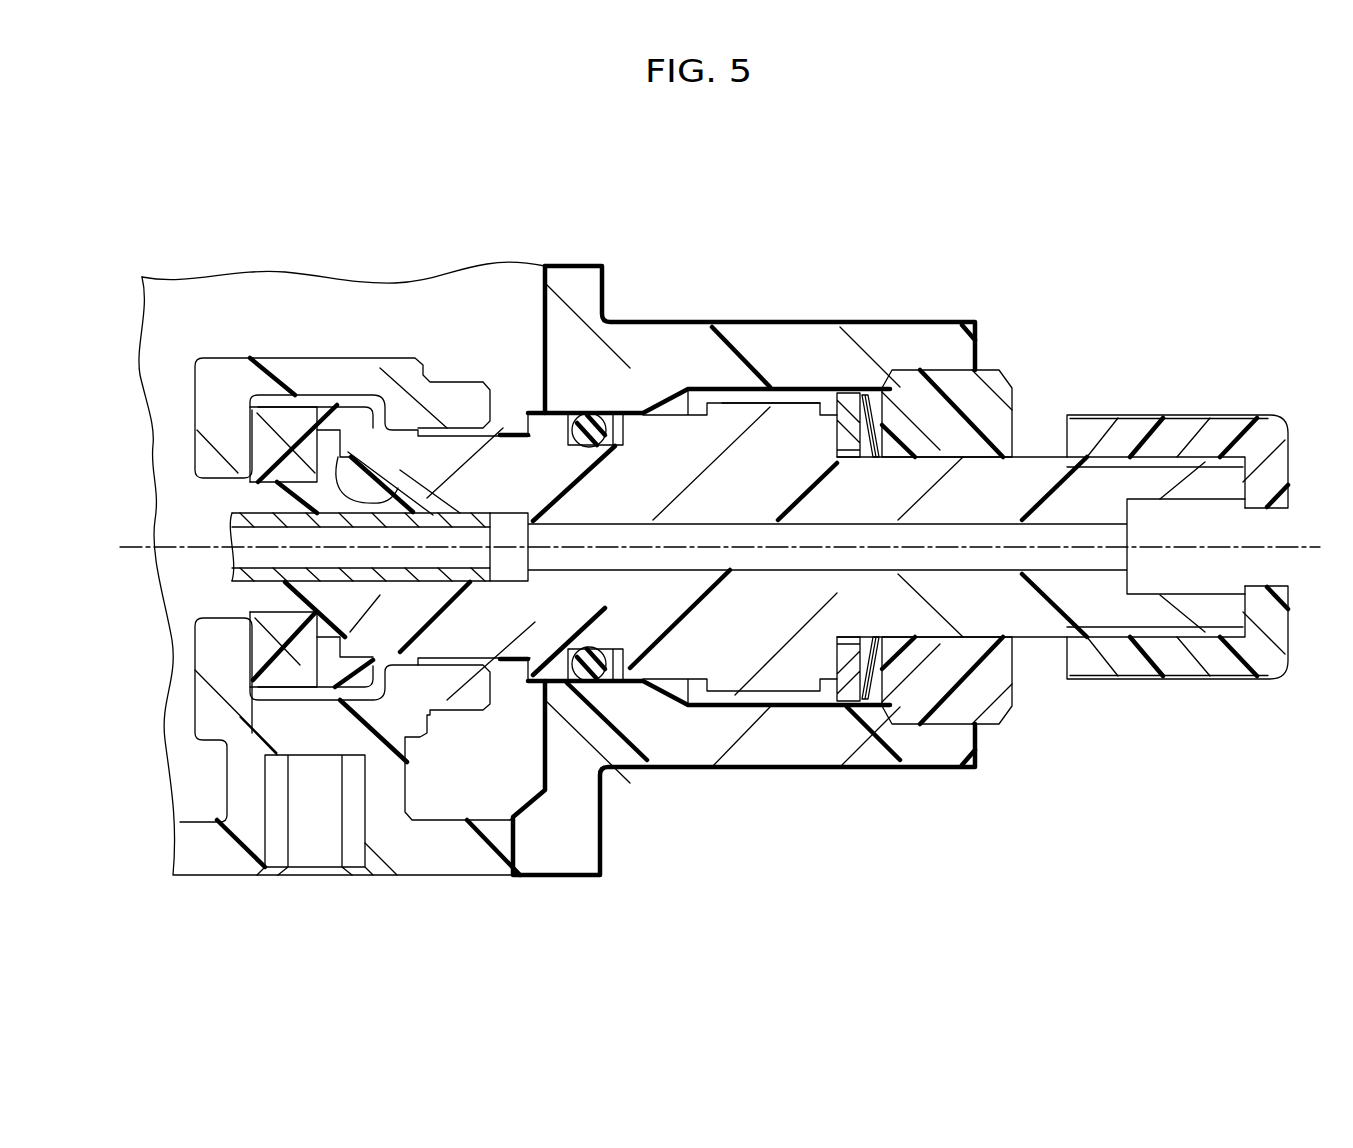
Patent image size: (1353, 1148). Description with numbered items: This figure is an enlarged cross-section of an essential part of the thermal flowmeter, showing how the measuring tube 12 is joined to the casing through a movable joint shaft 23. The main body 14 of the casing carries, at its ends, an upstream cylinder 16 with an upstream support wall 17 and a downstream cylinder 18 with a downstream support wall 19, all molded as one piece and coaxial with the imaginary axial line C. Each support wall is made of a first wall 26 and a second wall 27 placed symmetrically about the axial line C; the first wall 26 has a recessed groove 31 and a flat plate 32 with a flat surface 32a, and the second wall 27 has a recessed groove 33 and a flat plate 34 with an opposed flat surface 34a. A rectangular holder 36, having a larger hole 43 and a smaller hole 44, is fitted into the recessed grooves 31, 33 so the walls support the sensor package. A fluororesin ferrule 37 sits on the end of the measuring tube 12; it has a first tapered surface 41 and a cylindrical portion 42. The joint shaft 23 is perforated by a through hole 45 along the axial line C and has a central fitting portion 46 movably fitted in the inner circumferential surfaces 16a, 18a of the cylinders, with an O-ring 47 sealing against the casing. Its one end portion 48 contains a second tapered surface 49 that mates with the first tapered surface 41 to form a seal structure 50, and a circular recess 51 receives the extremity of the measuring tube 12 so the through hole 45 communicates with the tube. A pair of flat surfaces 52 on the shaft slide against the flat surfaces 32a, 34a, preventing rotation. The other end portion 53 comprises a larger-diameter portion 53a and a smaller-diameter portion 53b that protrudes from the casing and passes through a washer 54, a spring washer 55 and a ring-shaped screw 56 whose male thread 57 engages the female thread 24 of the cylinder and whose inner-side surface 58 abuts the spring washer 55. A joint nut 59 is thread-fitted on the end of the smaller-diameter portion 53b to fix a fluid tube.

The measuring tube 12 is at (238, 586).
The main body 14 is at (605, 320).
The upstream cylinder 16 is at (918, 769).
The inner circumferential surface 16a is at (551, 675).
The upstream support wall 17 is at (208, 338).
The downstream cylinder 18 is at (848, 785).
The end wall bore edge 18a is at (643, 743).
The downstream support wall 19 is at (327, 538).
The joint shaft 23 is at (793, 707).
The female thread 24 is at (953, 717).
The first wall 26 is at (195, 403).
The second wall 27 is at (195, 690).
The recessed groove 31 is at (305, 412).
The flat plate 32 is at (447, 398).
The flat surface 32a is at (462, 440).
The recessed groove 33 is at (277, 598).
The flat plate 34 is at (447, 702).
The flat surface 34a is at (522, 808).
The holder 36 is at (278, 405).
The ferrule 37 is at (325, 660).
The first tapered surface 41 is at (402, 664).
The cylindrical portion 42 is at (258, 606).
The larger hole 43 is at (317, 431).
The smaller hole 44 is at (325, 465).
The through hole 45 is at (642, 524).
The fitting portion 46 is at (578, 530).
The O-ring 47 is at (634, 412).
The one end portion 48 is at (400, 428).
The second tapered surface 49 is at (340, 407).
The seal structure 50 is at (365, 637).
The circular recess 51 is at (588, 413).
The flat surfaces 52 is at (530, 515).
The other end portion 53 is at (1038, 455).
The larger-diameter portion 53a is at (780, 427).
The smaller-diameter portion 53b is at (1050, 475).
The washer 54 is at (848, 425).
The spring washer 55 is at (870, 425).
The screw 56 is at (990, 400).
The male thread 57 is at (905, 400).
The inner-side surface 58 is at (923, 410).
The joint nut 59 is at (1148, 415).
The axial line C is at (1225, 550).